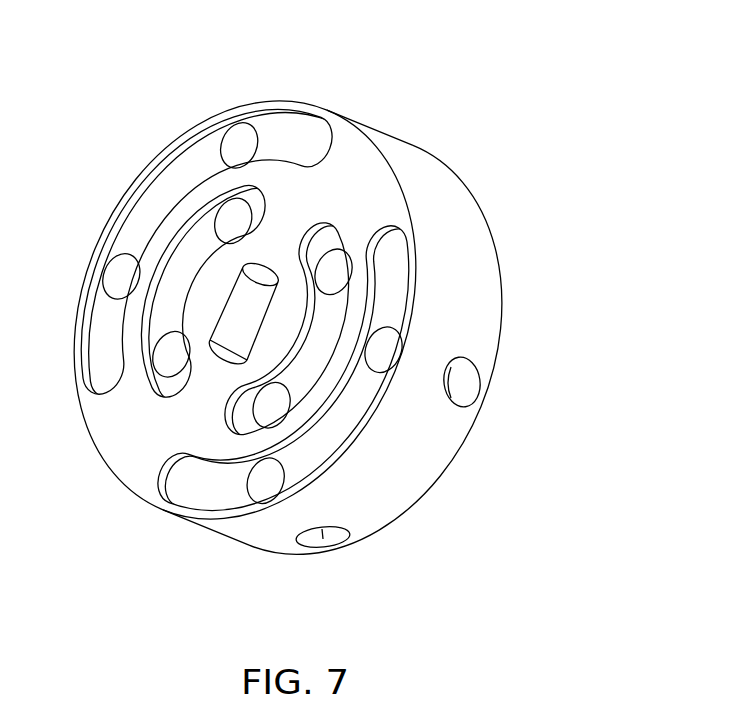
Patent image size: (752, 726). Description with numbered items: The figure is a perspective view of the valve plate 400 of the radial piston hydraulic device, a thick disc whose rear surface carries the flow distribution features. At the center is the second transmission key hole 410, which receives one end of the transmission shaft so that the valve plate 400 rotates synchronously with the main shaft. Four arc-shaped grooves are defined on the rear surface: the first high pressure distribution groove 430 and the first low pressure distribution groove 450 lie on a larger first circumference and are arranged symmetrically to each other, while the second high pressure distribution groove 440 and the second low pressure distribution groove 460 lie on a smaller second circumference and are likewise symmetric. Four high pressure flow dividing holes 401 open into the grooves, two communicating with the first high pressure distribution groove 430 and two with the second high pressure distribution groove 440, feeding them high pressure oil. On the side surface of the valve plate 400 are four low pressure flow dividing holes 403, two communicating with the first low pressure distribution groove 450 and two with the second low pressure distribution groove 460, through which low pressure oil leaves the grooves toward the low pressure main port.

The valve plate 400 is at (456, 217).
The high pressure flow dividing holes 401 is at (237, 142).
The low pressure flow dividing holes 403 is at (338, 539).
The second transmission key hole 410 is at (253, 305).
The first high pressure distribution groove 430 is at (287, 138).
The second high pressure distribution groove 440 is at (321, 240).
The first low pressure distribution groove 450 is at (337, 432).
The second low pressure distribution groove 460 is at (186, 258).